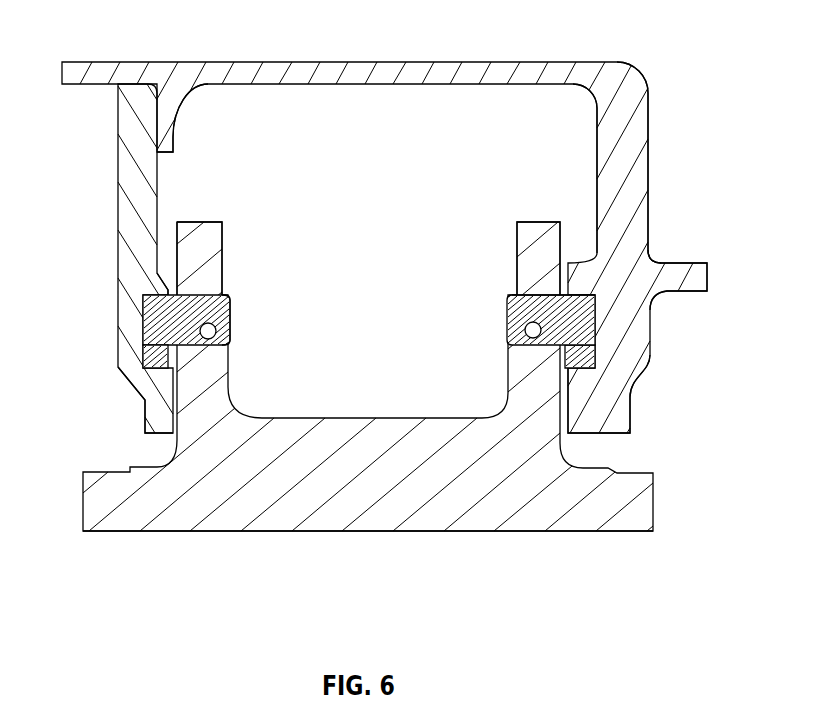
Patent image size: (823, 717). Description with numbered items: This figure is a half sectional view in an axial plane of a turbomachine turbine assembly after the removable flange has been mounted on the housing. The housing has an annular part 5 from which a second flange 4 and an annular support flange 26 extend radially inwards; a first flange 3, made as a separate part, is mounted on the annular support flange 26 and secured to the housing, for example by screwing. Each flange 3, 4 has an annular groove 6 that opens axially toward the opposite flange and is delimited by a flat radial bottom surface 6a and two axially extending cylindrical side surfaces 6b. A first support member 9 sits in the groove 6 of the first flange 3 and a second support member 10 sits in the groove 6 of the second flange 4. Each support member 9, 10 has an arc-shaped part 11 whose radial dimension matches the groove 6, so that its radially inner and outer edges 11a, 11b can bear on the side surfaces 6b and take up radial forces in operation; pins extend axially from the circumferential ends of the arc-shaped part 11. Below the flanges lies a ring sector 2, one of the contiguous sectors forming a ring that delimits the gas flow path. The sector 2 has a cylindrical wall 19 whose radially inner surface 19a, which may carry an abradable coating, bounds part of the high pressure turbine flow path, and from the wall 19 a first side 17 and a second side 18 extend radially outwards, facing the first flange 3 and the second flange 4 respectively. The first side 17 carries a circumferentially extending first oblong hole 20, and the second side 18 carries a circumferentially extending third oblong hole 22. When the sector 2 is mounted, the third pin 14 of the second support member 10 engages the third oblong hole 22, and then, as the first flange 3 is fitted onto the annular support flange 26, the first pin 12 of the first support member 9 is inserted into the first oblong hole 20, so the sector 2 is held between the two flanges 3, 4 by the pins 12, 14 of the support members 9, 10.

The sector 2 is at (384, 224).
The annular part 5 is at (373, 63).
The first flange 3 is at (130, 155).
The second flange 4 is at (624, 177).
The annular support flange 26 is at (178, 130).
The first side 17 is at (200, 252).
The second side 18 is at (523, 250).
The first support member 9 is at (381, 319).
The second support member 10 is at (573, 306).
The annular groove 6 is at (143, 327).
The bottom surface 6a is at (595, 322).
The side surface 6b is at (667, 293).
The arc-shaped part 11 is at (148, 348).
The radially inner edge 11a is at (147, 398).
The radially outer edge 11b is at (153, 285).
The first pin 12 is at (230, 307).
The first oblong hole 20 is at (216, 331).
The third pin 14 is at (525, 330).
The third oblong hole 22 is at (547, 292).
The cylindrical wall 19 is at (450, 490).
The radially inner surface 19a is at (543, 531).